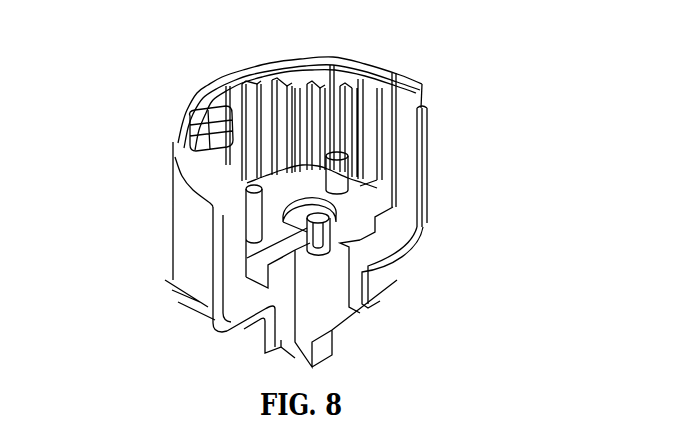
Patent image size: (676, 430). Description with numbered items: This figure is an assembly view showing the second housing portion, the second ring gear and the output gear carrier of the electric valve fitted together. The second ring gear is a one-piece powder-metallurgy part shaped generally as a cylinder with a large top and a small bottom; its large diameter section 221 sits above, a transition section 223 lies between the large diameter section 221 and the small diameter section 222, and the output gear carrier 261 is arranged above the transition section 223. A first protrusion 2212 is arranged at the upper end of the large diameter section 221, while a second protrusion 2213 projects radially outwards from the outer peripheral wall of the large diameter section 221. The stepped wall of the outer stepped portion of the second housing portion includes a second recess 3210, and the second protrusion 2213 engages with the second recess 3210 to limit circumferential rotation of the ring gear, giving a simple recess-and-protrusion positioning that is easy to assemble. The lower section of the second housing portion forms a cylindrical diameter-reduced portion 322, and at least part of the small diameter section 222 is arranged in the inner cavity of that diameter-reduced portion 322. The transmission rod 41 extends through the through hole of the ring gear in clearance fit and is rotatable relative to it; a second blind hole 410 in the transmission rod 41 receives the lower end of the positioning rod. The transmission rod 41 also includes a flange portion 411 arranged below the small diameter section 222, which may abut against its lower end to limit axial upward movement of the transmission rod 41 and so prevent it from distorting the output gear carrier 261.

The first protrusion 2212 is at (332, 62).
The transmission rod 41 is at (441, 150).
The second blind hole 410 is at (377, 172).
The output gear carrier 261 is at (347, 230).
The transition section 223 is at (382, 227).
The small diameter section 222 is at (403, 250).
The flange portion 411 is at (373, 303).
The second protrusion 2213 is at (163, 130).
The second recess 3210 is at (170, 155).
The large diameter section 221 is at (237, 250).
The diameter-reduced portion 322 is at (173, 283).